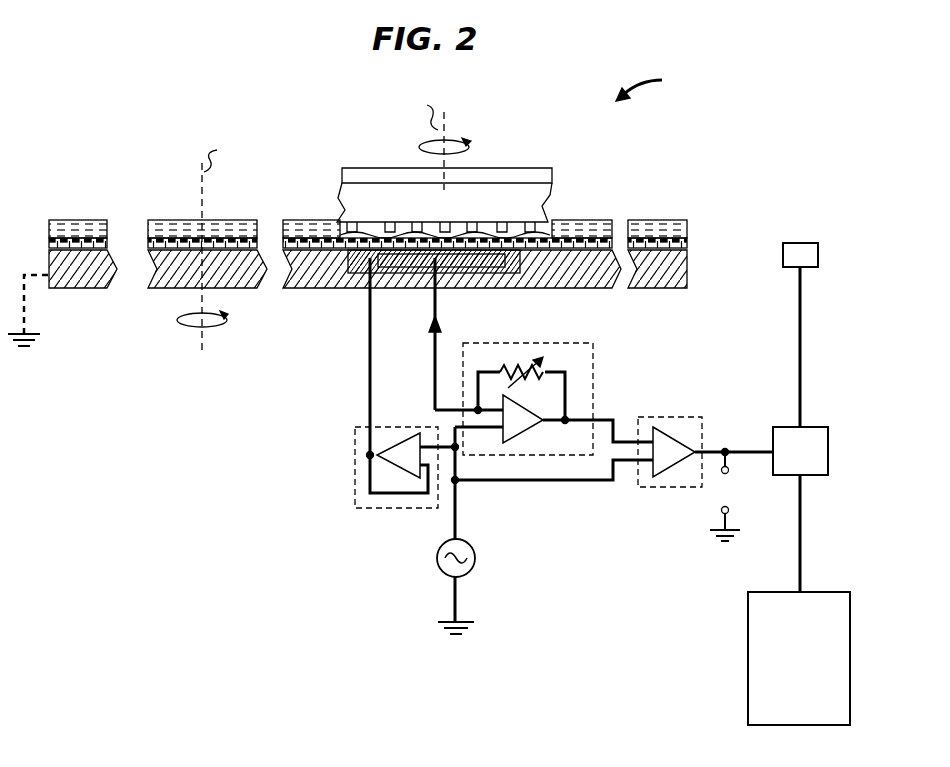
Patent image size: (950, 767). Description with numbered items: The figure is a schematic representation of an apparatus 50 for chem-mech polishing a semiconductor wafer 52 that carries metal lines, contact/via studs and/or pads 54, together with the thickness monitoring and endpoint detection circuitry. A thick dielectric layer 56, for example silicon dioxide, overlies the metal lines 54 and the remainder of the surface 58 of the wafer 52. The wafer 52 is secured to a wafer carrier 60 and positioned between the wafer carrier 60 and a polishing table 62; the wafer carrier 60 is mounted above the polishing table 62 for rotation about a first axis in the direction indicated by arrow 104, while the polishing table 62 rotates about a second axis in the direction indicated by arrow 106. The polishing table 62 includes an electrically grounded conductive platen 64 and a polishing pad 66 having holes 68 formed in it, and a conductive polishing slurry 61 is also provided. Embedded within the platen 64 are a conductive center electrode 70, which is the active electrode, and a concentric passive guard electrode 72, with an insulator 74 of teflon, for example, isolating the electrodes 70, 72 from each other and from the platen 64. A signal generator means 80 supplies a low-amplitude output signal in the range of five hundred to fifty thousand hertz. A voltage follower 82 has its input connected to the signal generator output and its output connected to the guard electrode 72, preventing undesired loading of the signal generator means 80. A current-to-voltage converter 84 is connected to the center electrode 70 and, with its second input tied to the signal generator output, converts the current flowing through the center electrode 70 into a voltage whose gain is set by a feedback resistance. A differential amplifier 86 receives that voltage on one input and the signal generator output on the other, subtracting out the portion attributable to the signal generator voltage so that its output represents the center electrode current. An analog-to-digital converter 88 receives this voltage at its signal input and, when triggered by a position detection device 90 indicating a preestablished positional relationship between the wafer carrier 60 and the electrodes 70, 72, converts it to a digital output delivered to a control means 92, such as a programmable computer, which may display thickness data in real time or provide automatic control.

The apparatus 50 is at (649, 84).
The semiconductor wafer 52 is at (545, 200).
The metal lines 54 is at (430, 221).
The dielectric layer 56 is at (375, 230).
The surface 58 is at (343, 226).
The wafer carrier 60 is at (545, 177).
The conductive polishing slurry 61 is at (77, 225).
The polishing table 62 is at (688, 272).
The conductive platen 64 is at (660, 288).
The polishing pad 66 is at (688, 238).
The holes 68 is at (580, 243).
The conductive center electrode 70 is at (455, 258).
The conductive guard electrode 72 is at (366, 280).
The insulator 74 is at (518, 276).
The signal generator means 80 is at (476, 563).
The voltage follower 82 is at (356, 456).
The current-to-voltage converter 84 is at (593, 355).
The differential amplifier 86 is at (643, 477).
The analog-to-digital converter 88 is at (812, 427).
The position detection device 90 is at (805, 243).
The control means 92 is at (782, 592).
The arrow 104 is at (425, 144).
The arrow 106 is at (185, 322).